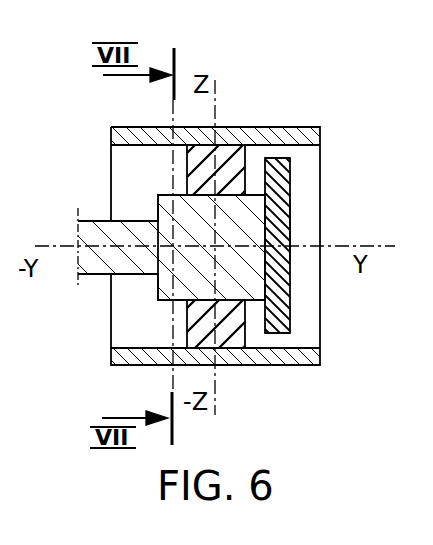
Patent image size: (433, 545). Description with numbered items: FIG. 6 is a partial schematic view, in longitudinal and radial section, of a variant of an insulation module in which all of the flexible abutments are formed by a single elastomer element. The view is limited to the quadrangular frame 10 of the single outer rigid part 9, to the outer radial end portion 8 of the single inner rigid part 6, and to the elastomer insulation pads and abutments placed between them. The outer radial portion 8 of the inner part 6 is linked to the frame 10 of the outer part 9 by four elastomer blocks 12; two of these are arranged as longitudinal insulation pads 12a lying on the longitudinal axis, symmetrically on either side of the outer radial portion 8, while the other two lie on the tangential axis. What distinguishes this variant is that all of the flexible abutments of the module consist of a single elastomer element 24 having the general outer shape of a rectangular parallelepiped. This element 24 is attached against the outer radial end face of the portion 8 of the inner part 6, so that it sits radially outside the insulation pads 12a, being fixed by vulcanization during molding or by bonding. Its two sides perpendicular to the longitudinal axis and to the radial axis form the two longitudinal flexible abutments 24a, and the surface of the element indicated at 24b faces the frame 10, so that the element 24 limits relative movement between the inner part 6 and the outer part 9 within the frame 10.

The inner rigid part 6 is at (94, 211).
The outer radial end portion 8 is at (187, 282).
The outer rigid part 9 is at (244, 221).
The quadrangular frame 10 is at (260, 128).
The elastomer blocks 12 is at (257, 336).
The longitudinal insulation pads 12a is at (225, 165).
The single elastomer element 24 is at (304, 200).
The longitudinal flexible abutments 24a is at (277, 160).
The disc surface 24b is at (280, 232).